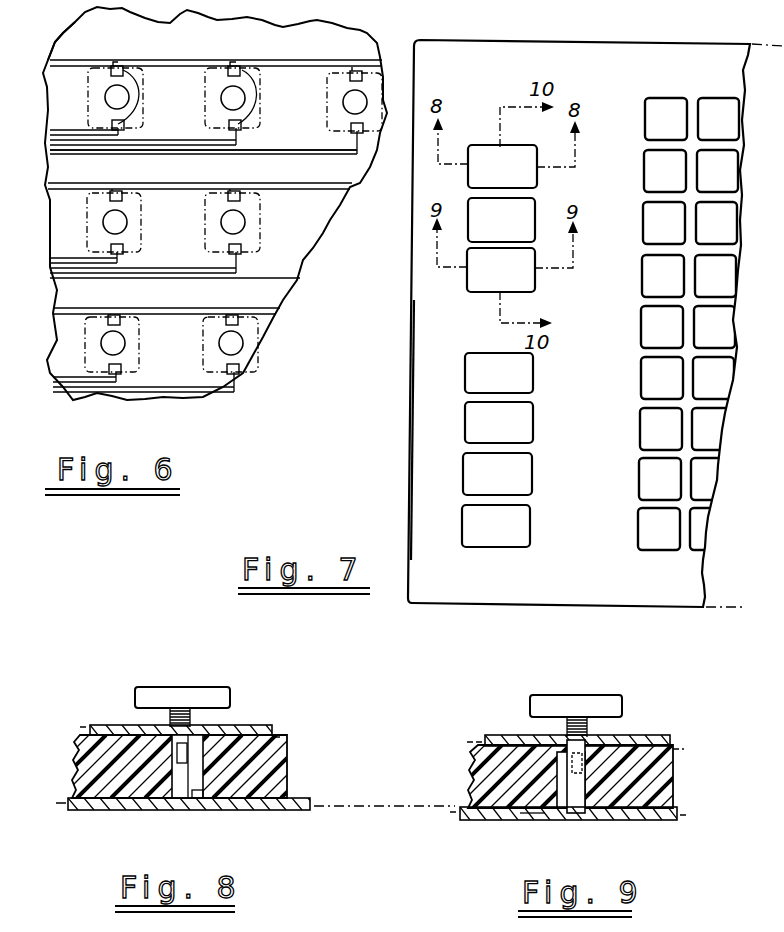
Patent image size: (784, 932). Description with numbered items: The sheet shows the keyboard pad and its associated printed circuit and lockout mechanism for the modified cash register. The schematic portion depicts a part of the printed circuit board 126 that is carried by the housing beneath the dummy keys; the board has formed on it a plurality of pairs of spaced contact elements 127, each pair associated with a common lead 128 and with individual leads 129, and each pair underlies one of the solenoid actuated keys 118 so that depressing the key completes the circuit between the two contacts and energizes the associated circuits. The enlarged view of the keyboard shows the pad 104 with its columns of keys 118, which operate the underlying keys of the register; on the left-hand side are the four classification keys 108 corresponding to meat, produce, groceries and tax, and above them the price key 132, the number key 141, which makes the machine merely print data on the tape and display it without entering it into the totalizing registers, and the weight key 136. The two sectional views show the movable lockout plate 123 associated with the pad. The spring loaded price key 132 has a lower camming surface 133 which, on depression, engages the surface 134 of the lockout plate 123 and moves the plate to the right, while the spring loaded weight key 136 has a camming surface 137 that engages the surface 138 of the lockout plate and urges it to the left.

In FIG. 7, the pad 104 is at (408, 462).
In FIG. 7, the classification keys 108 is at (535, 552).
In FIG. 6, the solenoid actuated keys 118 is at (207, 110).
In FIG. 7, the solenoid actuated keys 118 is at (677, 568).
In FIG. 8, the lockout plate 123 is at (300, 803).
In FIG. 9, the lockout plate 123 is at (672, 813).
In FIG. 8, the printed circuit board 126 is at (233, 728).
In FIG. 9, the printed circuit board 126 is at (627, 742).
In FIG. 6, the contact elements 127 is at (122, 69).
In FIG. 6, the common lead 128 is at (62, 52).
In FIG. 8, the common lead 128 is at (115, 726).
In FIG. 9, the common lead 128 is at (510, 734).
In FIG. 6, the individual leads 129 is at (268, 148).
In FIG. 7, the price key 132 is at (536, 181).
In FIG. 8, the price key 132 is at (202, 692).
In FIG. 8, the camming surface 133 is at (247, 737).
In FIG. 8, the surface 134 is at (197, 804).
In FIG. 7, the weight key 136 is at (534, 287).
In FIG. 9, the weight key 136 is at (583, 698).
In FIG. 9, the camming surface 137 is at (527, 814).
In FIG. 9, the surface 138 is at (572, 817).
In FIG. 7, the number key 141 is at (534, 232).